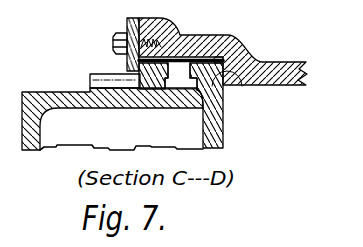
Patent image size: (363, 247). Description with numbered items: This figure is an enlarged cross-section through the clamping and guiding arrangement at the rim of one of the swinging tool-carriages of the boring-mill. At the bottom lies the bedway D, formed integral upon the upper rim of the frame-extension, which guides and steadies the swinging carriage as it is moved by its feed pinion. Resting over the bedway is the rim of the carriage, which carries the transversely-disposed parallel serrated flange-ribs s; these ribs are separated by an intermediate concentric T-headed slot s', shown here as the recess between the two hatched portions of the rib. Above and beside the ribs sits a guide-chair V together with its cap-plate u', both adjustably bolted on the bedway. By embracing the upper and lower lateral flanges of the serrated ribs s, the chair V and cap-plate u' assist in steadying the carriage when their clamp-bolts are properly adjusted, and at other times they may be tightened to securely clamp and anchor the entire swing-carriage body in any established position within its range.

The cap-plate u' is at (120, 36).
The guide-chair V is at (192, 41).
The concentric T-headed slot s' is at (181, 76).
The serrated flange-rib s is at (188, 102).
The bedway D is at (240, 87).